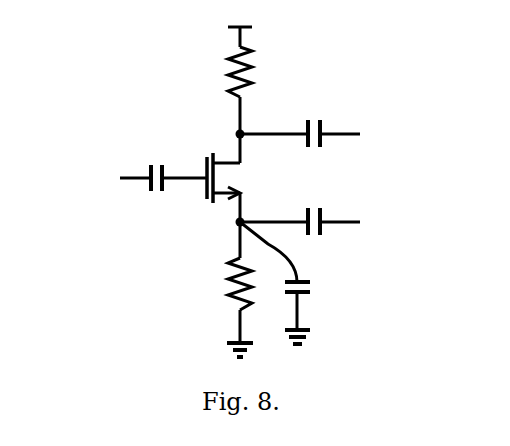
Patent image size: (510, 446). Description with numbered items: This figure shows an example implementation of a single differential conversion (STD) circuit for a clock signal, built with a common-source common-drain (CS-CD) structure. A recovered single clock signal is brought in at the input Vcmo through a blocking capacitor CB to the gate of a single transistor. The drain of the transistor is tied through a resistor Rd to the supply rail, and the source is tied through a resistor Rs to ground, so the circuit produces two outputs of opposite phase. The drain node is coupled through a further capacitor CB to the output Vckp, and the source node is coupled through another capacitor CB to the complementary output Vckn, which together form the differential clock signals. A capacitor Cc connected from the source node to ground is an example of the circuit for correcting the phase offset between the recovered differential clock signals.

The drain resistor Rd is at (221, 72).
The source resistor Rs is at (222, 284).
The capacitor Cc is at (292, 283).
The blocking capacitor CB is at (240, 162).
The common-mode output voltage input Vcmo is at (79, 176).
The positive clock output Vckp is at (395, 133).
The negative clock output Vckn is at (395, 225).